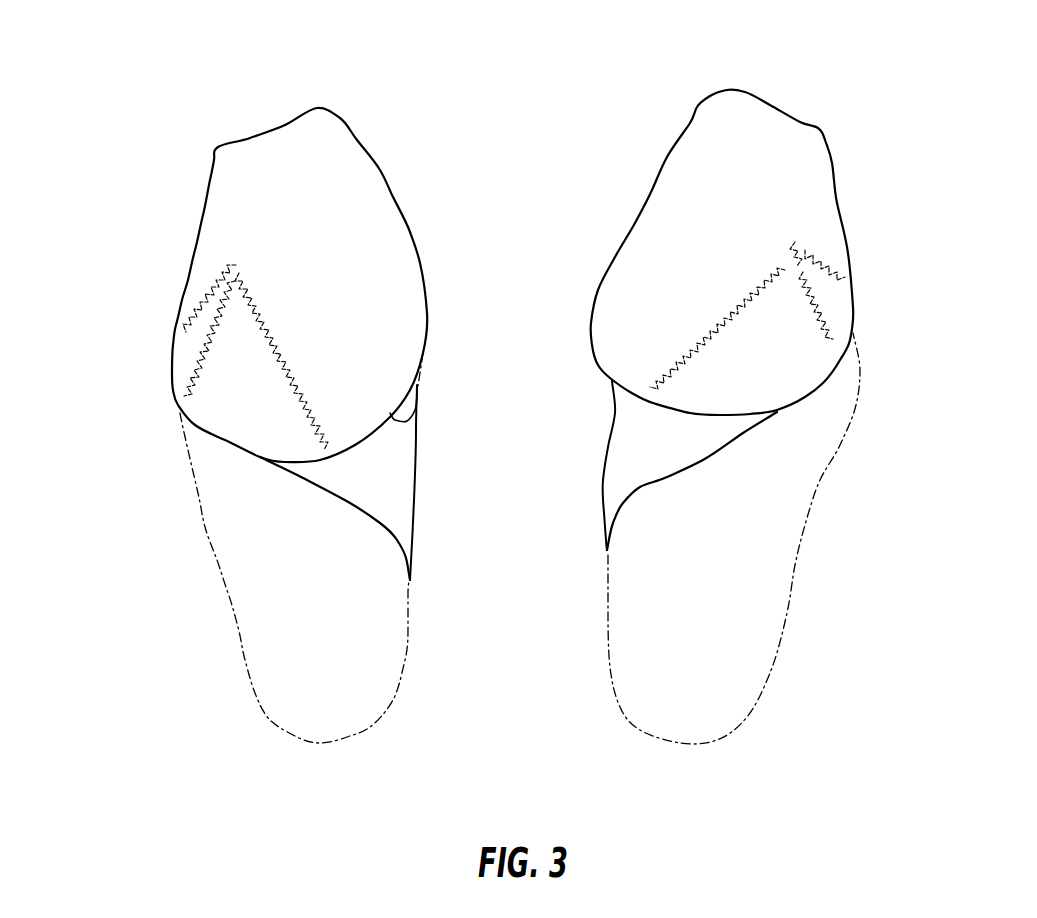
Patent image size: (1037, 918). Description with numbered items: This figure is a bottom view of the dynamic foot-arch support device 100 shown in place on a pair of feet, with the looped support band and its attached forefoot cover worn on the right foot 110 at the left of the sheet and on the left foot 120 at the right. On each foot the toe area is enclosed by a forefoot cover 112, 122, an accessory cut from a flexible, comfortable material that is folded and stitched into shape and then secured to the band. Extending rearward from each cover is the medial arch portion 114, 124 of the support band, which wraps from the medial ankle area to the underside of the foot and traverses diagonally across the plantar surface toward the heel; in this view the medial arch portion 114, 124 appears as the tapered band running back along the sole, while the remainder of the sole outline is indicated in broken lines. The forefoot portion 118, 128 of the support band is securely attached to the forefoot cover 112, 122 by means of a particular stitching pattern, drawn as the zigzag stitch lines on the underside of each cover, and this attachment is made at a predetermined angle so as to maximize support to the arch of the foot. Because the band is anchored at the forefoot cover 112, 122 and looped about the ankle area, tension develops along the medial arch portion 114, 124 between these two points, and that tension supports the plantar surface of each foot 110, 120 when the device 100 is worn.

The dynamic foot-arch support device 100 is at (502, 76).
The right foot 110 is at (84, 289).
The forefoot cover 112 is at (270, 135).
The medial arch portion 114 is at (408, 533).
The forefoot portion 118 is at (221, 403).
The left foot 120 is at (941, 281).
The forefoot cover 122 is at (810, 130).
The medial arch portion 124 is at (609, 503).
The forefoot portion 128 is at (815, 351).